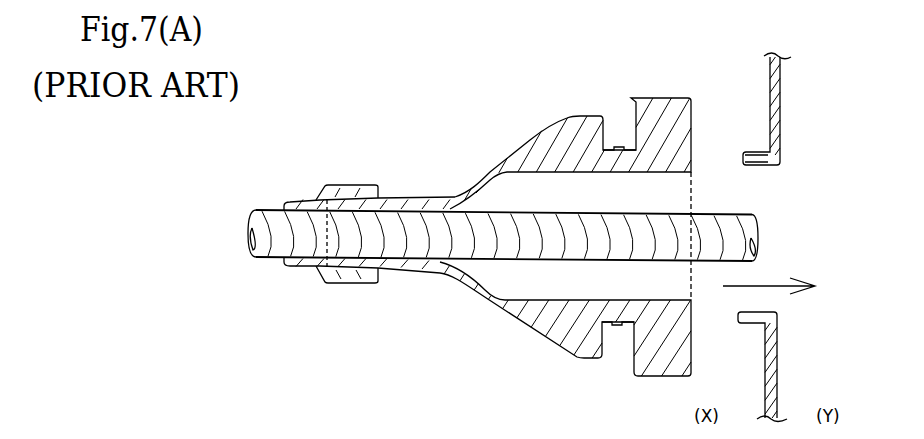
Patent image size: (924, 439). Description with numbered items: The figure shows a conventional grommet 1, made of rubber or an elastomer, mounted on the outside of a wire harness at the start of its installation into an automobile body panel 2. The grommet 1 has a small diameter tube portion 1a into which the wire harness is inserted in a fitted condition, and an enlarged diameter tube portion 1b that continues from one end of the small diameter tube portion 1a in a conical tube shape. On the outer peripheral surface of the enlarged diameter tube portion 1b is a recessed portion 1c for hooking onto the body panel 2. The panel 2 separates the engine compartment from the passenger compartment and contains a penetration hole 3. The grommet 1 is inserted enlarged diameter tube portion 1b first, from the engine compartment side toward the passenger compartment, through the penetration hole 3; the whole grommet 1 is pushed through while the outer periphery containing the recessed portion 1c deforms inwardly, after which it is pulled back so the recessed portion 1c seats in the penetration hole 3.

The grommet 1 is at (457, 177).
The small diameter tube portion 1a is at (432, 196).
The enlarged diameter tube portion 1b is at (572, 137).
The recessed portion 1c is at (623, 140).
The automobile body panel 2 is at (781, 119).
The penetration hole 3 is at (771, 168).